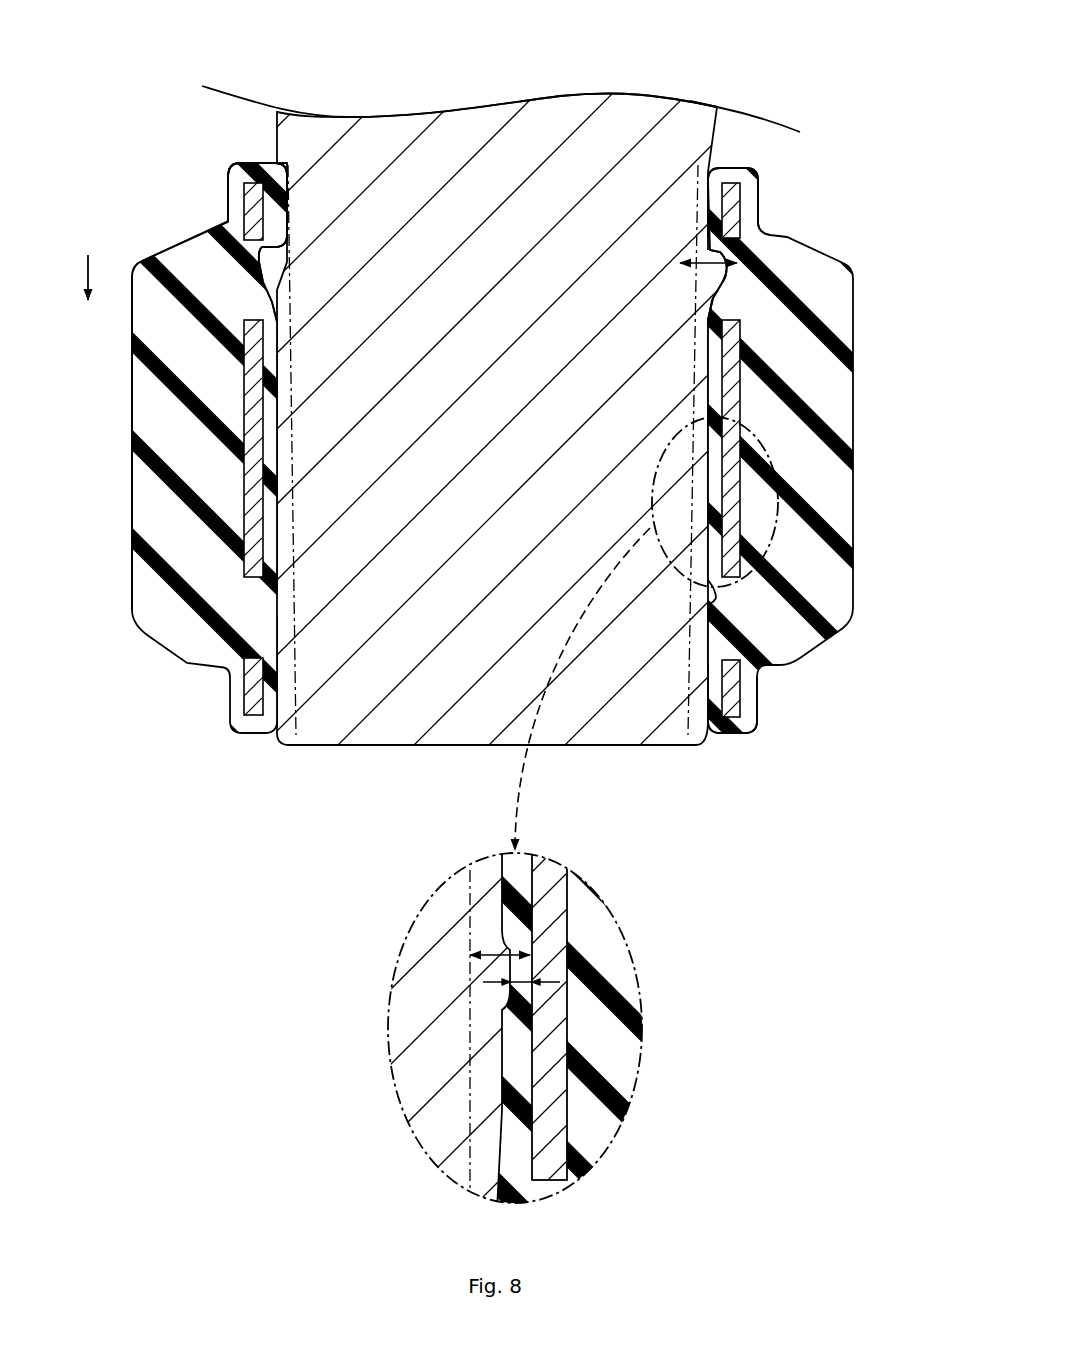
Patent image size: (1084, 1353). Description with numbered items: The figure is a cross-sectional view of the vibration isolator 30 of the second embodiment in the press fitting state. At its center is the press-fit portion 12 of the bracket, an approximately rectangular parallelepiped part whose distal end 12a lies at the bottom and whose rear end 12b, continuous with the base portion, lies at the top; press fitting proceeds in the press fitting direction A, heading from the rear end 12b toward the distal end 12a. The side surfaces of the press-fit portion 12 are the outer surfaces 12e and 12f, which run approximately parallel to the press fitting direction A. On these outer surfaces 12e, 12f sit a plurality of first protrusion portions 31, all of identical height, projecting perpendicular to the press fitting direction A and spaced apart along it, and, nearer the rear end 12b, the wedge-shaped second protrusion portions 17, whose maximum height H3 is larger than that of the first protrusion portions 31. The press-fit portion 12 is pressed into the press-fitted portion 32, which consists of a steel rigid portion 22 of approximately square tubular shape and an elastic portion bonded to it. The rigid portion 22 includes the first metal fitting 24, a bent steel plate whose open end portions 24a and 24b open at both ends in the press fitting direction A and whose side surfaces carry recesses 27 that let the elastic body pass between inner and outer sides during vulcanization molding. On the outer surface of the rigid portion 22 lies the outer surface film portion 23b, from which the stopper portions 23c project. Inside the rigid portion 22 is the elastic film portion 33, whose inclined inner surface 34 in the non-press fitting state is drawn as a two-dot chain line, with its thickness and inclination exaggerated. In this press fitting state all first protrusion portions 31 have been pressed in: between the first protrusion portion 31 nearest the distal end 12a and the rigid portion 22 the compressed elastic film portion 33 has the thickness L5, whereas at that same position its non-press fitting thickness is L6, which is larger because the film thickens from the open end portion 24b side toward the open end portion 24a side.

The press-fit portion 12 is at (470, 746).
The distal end 12a is at (388, 748).
The rear end 12b is at (690, 143).
The outer surface 12e is at (270, 606).
The outer surface 12f is at (718, 588).
The second protrusion portion 17 is at (262, 272).
The rigid portion 22 is at (222, 384).
The outer surface film portion 23b is at (757, 195).
The stopper portion 23c is at (499, 448).
The first metal fitting 24 is at (740, 510).
The open end portion 24a is at (756, 728).
The open end portion 24b is at (246, 180).
The recess 27 is at (292, 222).
The vibration isolator 30 is at (750, 86).
The first protrusion portion 31 is at (523, 707).
The press-fitted portion 32 is at (168, 190).
The elastic film portion 33 is at (280, 412).
The inner surface 34 is at (282, 432).
The press fitting direction A is at (88, 293).
The maximum height H3 is at (697, 262).
The thickness L5 is at (530, 996).
The thickness L6 is at (478, 955).